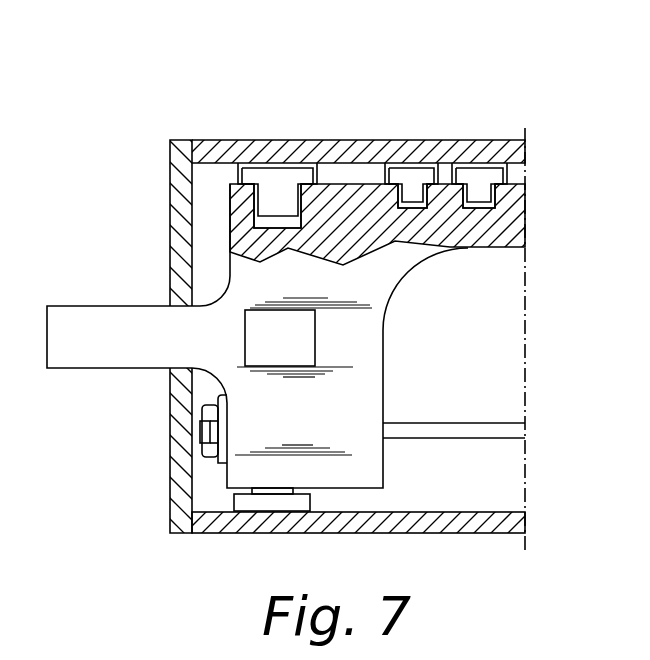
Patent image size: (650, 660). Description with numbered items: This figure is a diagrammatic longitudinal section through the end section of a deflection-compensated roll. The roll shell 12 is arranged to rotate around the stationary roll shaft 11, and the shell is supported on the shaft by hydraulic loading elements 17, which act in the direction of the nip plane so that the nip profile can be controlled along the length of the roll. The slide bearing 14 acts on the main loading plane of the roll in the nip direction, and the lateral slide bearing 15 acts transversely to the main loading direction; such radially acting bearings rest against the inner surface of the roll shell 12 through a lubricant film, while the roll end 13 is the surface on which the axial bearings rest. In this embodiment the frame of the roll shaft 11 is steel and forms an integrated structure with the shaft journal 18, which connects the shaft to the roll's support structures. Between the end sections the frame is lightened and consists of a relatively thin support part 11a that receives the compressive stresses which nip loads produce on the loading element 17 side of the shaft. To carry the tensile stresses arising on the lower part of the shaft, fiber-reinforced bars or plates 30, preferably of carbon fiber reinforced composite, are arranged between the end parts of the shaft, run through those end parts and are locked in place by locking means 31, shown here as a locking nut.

The roll shaft 11 is at (368, 355).
The support part 11a is at (527, 223).
The roll shell 12 is at (454, 151).
The roll end 13 is at (175, 218).
The slide bearing 14 is at (277, 174).
The lateral slide bearing 15 is at (257, 335).
The hydraulic loading element 17 is at (413, 178).
The shaft journal 18 is at (98, 348).
The fiber-reinforced bar or plate 30 is at (400, 425).
The locking means 31 is at (207, 432).